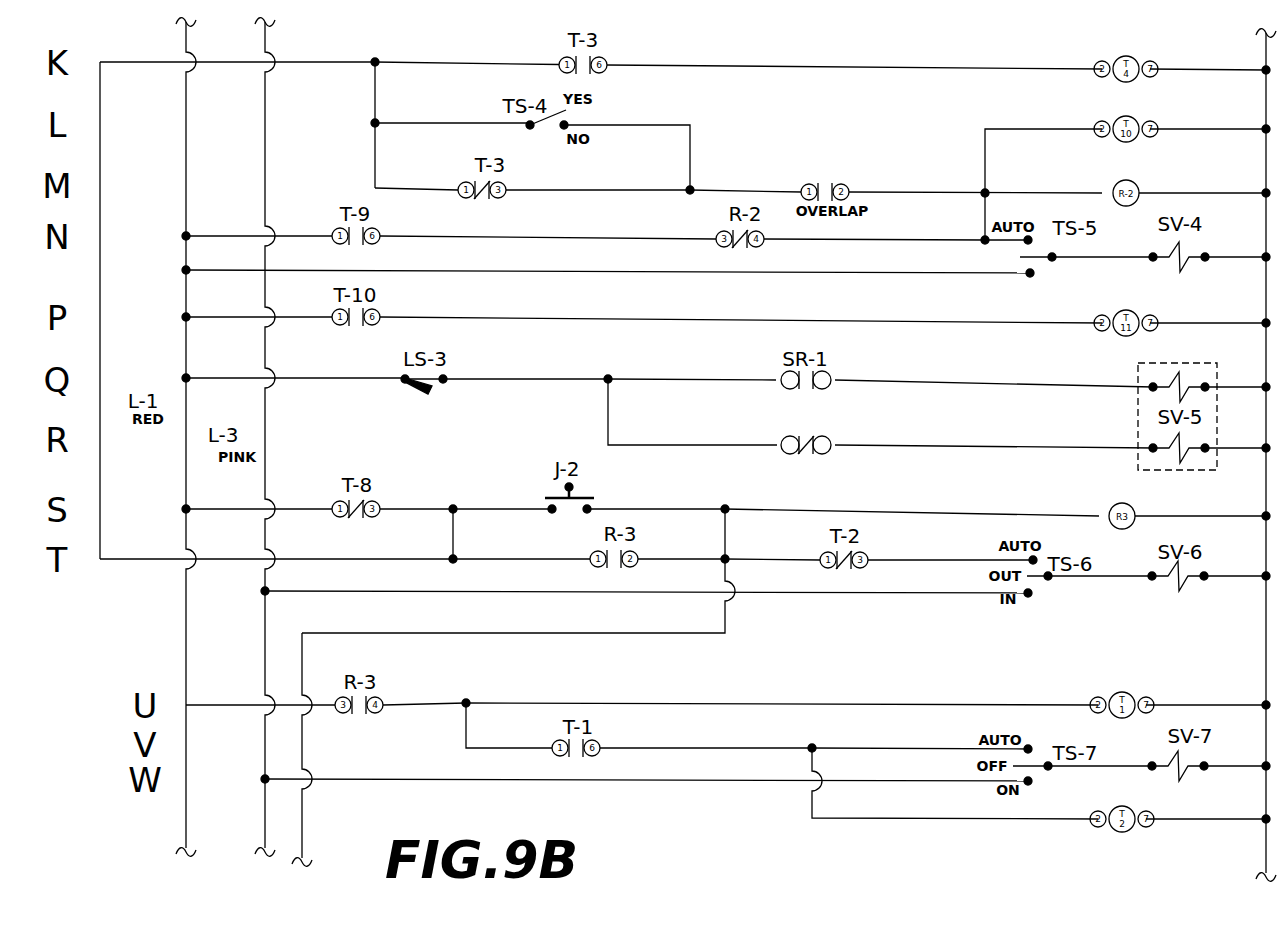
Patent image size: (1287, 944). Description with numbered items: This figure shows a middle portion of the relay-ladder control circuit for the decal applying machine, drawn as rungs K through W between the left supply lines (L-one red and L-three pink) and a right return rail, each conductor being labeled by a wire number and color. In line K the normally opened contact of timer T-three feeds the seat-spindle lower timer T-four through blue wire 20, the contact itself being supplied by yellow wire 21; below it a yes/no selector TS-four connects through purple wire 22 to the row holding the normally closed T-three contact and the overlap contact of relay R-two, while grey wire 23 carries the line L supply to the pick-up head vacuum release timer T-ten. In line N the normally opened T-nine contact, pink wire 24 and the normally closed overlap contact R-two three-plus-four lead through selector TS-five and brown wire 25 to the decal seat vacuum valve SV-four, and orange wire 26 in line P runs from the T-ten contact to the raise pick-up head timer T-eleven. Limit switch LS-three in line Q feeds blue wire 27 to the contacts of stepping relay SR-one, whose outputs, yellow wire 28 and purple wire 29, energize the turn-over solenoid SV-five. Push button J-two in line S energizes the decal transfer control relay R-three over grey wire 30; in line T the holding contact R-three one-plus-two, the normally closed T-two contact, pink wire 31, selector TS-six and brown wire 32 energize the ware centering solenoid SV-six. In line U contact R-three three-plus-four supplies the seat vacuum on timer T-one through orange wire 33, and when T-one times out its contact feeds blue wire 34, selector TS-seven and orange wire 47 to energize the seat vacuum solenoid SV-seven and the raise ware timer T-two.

The wire 20 blue 20 is at (854, 61).
The wire 21 yellow 21 is at (467, 276).
The wire 22 purple 22 is at (625, 148).
The wire 23 grey 23 is at (1043, 175).
The ware 24 is at (548, 229).
The wire 25 brown 25 is at (1086, 249).
The seating surface 26 is at (741, 312).
The wire 27 blue 27 is at (590, 371).
The seating surface 28 is at (994, 376).
The wire 29 purple 29 is at (880, 413).
The wire 30 grey 30 is at (843, 504).
The wire 31 pink 31 is at (952, 552).
The wire 32 brown 32 is at (1089, 588).
The wire 33 orange 33 is at (780, 696).
The wire 34 blue 34 is at (816, 741).
The wire 47 orange 47 is at (1082, 777).